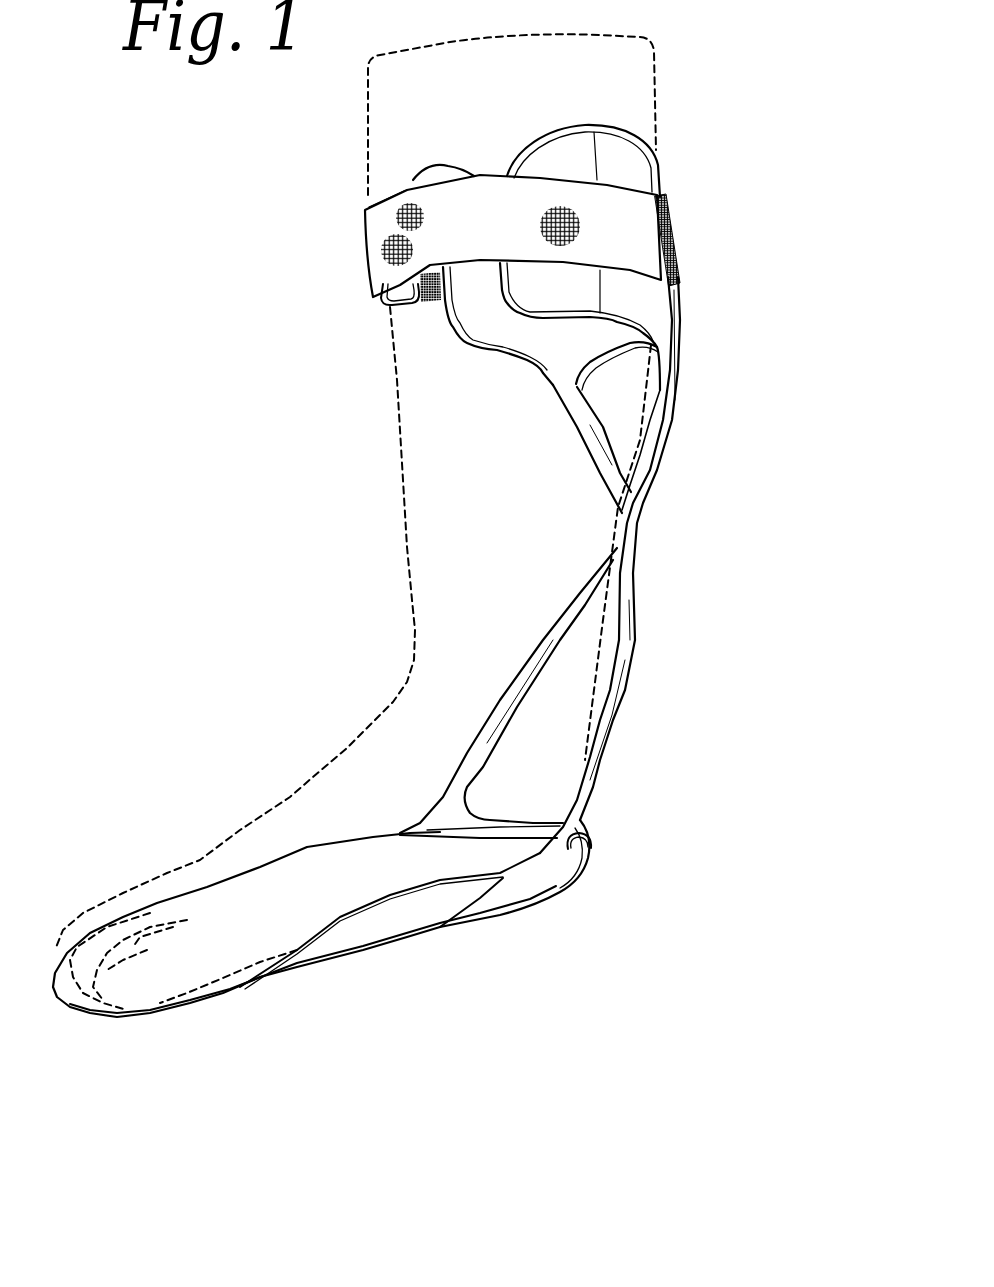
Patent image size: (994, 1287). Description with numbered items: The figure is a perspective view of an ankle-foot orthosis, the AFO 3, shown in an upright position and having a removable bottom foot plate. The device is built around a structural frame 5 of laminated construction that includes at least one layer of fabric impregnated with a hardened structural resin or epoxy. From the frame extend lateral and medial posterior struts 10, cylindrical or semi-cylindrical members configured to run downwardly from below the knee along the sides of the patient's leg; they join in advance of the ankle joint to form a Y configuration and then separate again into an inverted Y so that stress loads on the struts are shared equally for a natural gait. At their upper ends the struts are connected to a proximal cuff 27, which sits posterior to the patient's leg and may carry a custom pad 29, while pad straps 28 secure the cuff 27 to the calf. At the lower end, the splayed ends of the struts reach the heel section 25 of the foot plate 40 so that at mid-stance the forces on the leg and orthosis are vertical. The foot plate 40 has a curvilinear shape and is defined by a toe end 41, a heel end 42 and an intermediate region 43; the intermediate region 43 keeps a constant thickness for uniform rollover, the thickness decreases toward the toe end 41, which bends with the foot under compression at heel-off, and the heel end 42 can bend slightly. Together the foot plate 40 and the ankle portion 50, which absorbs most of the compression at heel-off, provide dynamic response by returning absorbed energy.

The AFO 3 is at (714, 269).
The proximal cuff 27 is at (632, 165).
The pad straps 28 is at (635, 233).
The custom pad 29 is at (400, 300).
The structural frame 5 is at (640, 552).
The lateral and medial posterior struts 10 is at (630, 647).
The ankle portion 50 is at (620, 760).
The heel section 25 is at (582, 867).
The heel end 42 is at (566, 886).
The toe end 41 is at (160, 1013).
The foot plate 40 is at (366, 958).
The intermediate region 43 is at (300, 975).